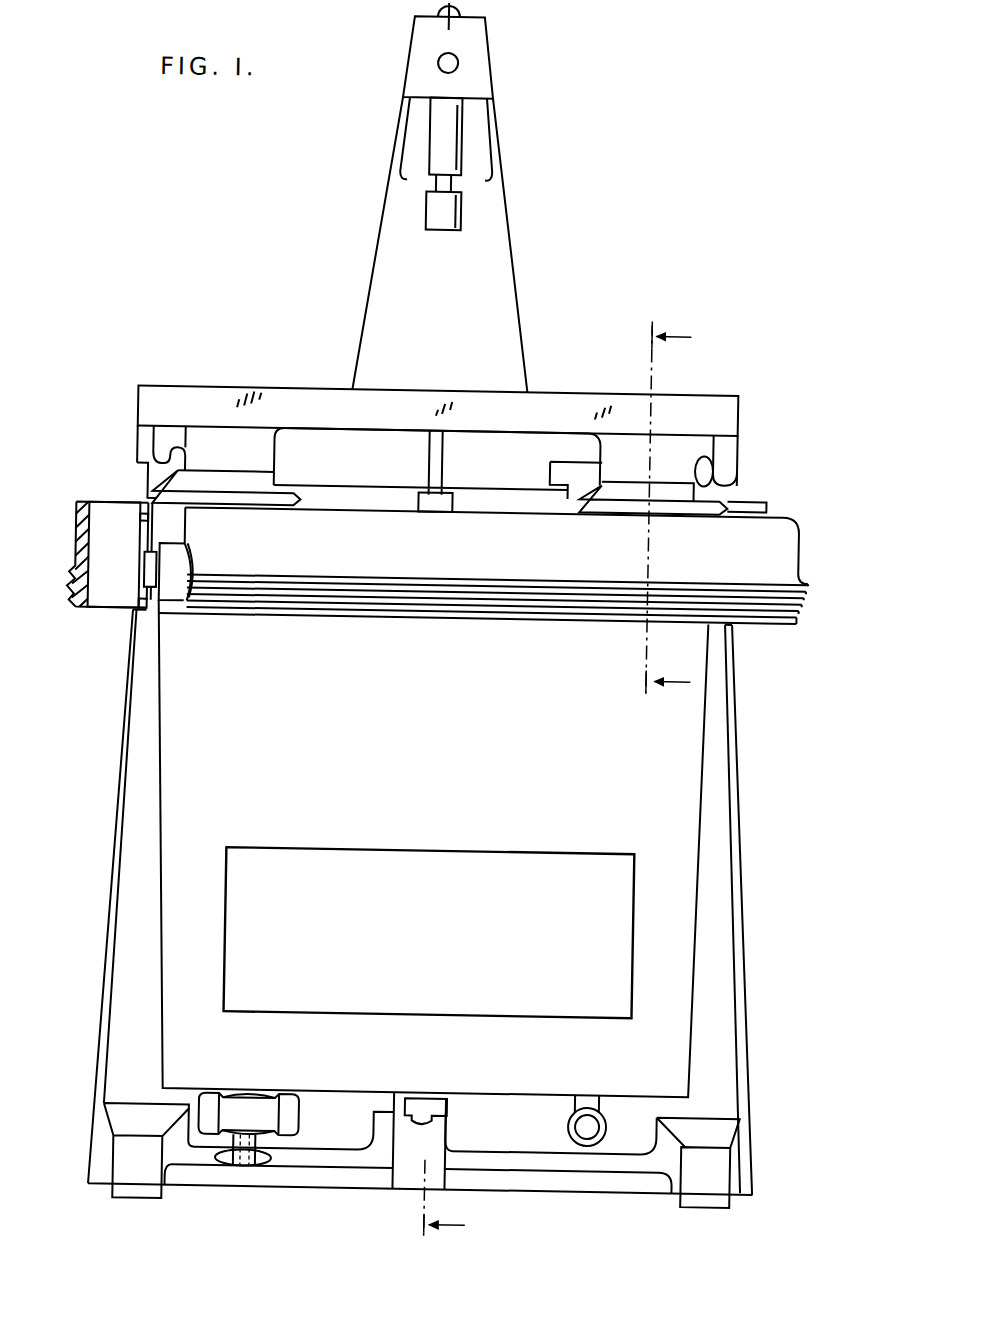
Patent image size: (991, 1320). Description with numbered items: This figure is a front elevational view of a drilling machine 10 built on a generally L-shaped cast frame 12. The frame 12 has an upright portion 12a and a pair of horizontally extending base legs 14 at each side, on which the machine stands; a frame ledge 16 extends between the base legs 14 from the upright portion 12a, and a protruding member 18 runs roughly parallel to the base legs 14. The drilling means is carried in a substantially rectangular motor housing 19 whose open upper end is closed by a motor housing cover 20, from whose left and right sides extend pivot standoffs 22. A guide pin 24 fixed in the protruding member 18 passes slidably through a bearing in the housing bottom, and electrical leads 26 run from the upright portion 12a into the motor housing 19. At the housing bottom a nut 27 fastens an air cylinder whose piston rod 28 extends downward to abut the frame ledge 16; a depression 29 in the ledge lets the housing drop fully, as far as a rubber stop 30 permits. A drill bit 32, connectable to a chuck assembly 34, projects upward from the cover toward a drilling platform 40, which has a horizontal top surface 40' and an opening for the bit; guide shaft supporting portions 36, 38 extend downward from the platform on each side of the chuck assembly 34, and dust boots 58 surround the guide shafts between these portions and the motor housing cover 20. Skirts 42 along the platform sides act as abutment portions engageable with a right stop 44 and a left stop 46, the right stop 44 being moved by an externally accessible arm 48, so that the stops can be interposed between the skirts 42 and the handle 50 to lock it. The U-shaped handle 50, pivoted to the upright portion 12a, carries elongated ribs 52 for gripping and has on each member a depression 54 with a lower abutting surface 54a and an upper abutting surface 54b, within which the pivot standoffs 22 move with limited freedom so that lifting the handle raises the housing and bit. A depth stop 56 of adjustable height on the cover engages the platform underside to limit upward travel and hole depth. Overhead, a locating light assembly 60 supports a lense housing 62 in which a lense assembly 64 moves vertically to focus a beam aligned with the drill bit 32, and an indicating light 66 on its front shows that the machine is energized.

The drilling machine 10 is at (604, 217).
The cast frame 12 is at (759, 1190).
The upright portion 12a is at (720, 785).
The base legs 14 is at (138, 1158).
The frame ledge 16 is at (548, 1178).
The protruding member 18 is at (452, 1148).
The motor housing 19 is at (176, 753).
The motor housing cover 20 is at (170, 582).
The pivot standoffs 22 is at (143, 575).
The guide pin 24 is at (430, 1119).
The electrical leads 26 is at (595, 1125).
The nut 27 is at (215, 1122).
The piston rod 28 is at (251, 1167).
The depression 29 is at (273, 1163).
The rubber stop 30 is at (432, 1100).
The drill bit 32 is at (426, 443).
The chuck assembly 34 is at (442, 503).
The guide shaft supporting portion 36 is at (225, 456).
The guide shaft supporting portion 38 is at (682, 448).
The drilling platform 40 is at (473, 437).
The horizontal top surface 40' is at (437, 384).
The skirts 42 is at (143, 445).
The right stop 44 is at (713, 488).
The left stop 46 is at (154, 485).
The arm 48 is at (763, 500).
The handle 50 is at (79, 540).
The elongated ribs 52 is at (145, 577).
The depression 54 is at (140, 535).
The lower abutting surface 54a is at (137, 608).
The upper abutting surface 54b is at (147, 512).
The drilling depth stop 56 is at (573, 471).
The dust boots 58 is at (196, 504).
The locating light assembly 60 is at (472, 261).
The lense housing 62 is at (442, 135).
The lense assembly 64 is at (438, 210).
The indicating light 66 is at (447, 63).